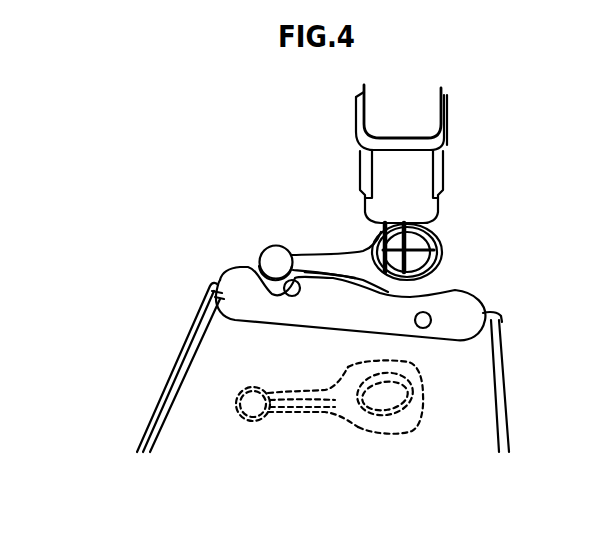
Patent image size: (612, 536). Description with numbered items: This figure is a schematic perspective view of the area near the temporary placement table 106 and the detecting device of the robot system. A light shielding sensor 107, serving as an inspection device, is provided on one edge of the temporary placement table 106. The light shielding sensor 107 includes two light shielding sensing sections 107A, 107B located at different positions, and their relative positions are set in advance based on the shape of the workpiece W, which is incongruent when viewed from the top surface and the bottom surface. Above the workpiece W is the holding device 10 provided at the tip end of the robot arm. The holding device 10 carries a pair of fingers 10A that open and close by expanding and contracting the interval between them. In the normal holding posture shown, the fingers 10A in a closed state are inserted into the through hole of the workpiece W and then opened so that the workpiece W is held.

The holding device 10 is at (358, 164).
The fingers 10A is at (370, 238).
The workpiece W is at (450, 251).
The temporary placement table 106 is at (175, 372).
The light shielding sensor 107 is at (205, 305).
The light shielding sensing section 107A is at (232, 263).
The light shielding sensing section 107B is at (432, 320).